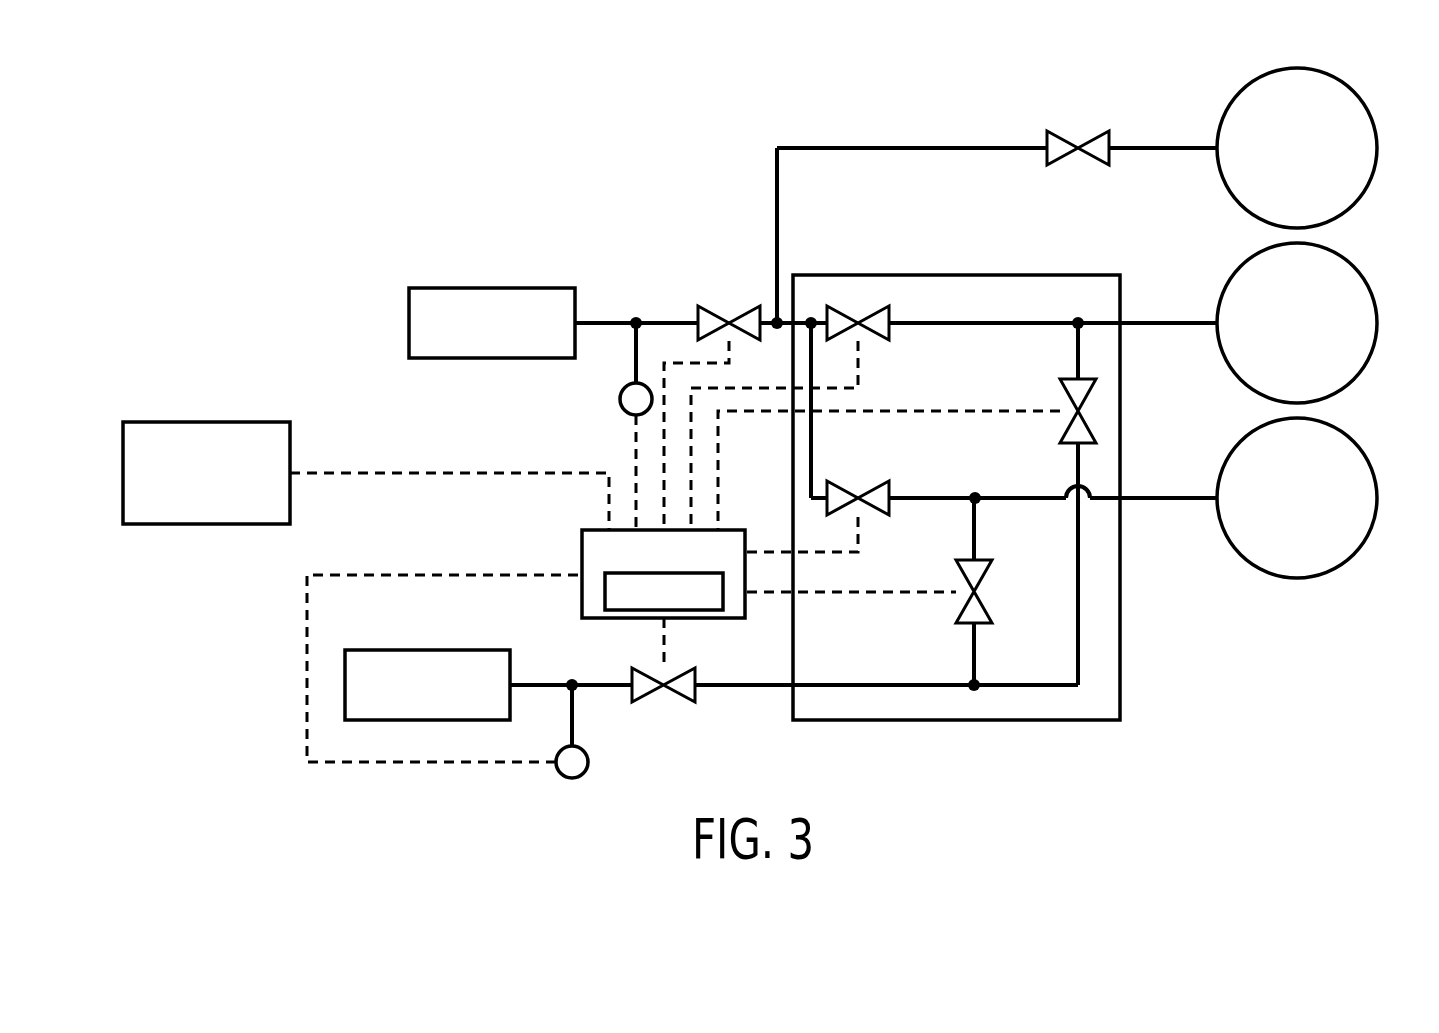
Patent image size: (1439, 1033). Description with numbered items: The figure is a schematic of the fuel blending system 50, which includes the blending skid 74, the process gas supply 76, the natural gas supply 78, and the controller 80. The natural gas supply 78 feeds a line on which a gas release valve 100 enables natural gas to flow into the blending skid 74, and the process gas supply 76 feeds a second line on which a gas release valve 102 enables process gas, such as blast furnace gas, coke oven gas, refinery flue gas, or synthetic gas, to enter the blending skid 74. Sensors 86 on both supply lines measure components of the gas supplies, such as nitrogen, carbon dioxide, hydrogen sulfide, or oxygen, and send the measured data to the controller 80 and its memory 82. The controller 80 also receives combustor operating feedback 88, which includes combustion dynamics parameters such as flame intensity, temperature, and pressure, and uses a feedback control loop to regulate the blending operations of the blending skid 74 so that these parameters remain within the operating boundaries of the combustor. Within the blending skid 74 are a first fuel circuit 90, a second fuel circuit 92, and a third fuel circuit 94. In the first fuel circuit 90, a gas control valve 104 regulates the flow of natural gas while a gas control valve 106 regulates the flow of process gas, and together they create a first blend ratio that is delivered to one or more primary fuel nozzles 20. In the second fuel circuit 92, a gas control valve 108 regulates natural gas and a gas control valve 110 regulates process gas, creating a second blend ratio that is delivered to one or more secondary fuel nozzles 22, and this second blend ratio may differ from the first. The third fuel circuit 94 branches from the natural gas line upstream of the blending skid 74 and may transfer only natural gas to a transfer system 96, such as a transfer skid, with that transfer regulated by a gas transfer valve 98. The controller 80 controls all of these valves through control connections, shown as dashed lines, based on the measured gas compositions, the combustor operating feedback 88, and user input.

The fuel blending system 50 is at (288, 143).
The natural gas supply 78 is at (488, 288).
The process gas supply 76 is at (425, 650).
The combustor operating feedback 88 is at (205, 422).
The controller 80 is at (582, 548).
The memory 82 is at (605, 590).
The sensors 86 is at (618, 413).
The blending skid 74 is at (1138, 733).
The gas release valve 100 is at (742, 313).
The gas transfer valve 98 is at (1092, 138).
The gas control valve 104 is at (860, 290).
The gas control valve 106 is at (1068, 378).
The gas control valve 108 is at (845, 483).
The gas control valve 110 is at (987, 605).
The gas release valve 102 is at (677, 704).
The third fuel circuit 94 is at (1148, 171).
The first fuel circuit 90 is at (1148, 346).
The second fuel circuit 92 is at (1148, 521).
The transfer system 96 is at (1353, 88).
The primary fuel nozzles 20 is at (1353, 263).
The secondary fuel nozzles 22 is at (1353, 438).